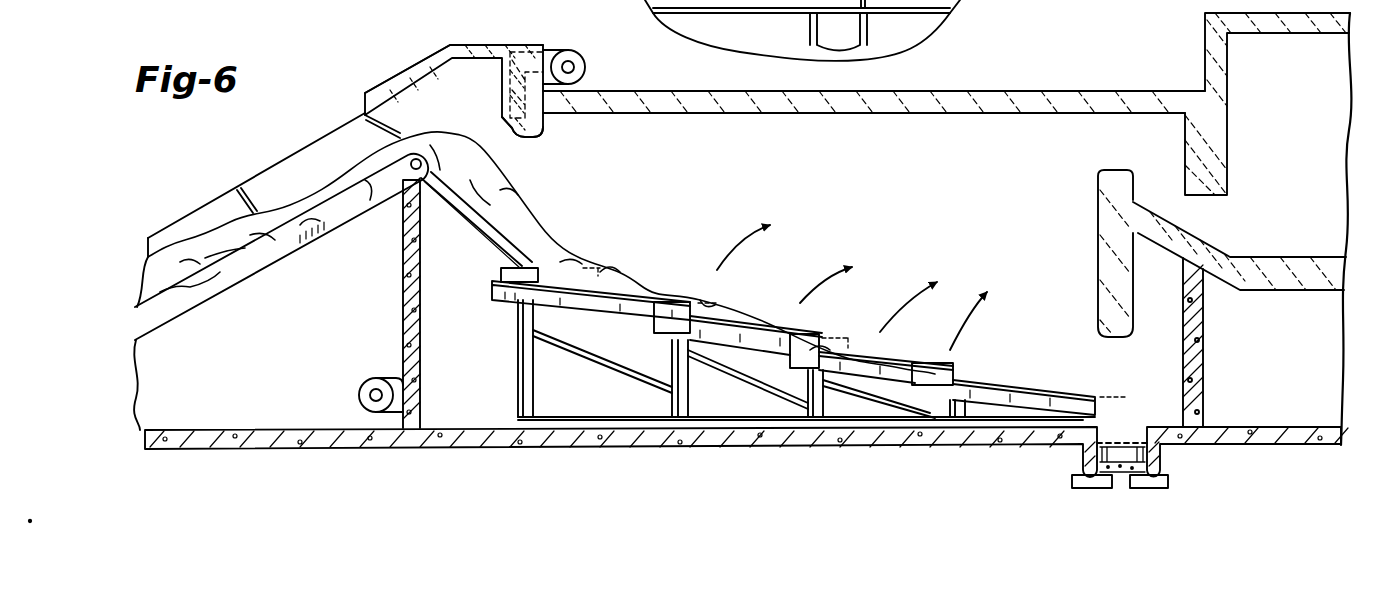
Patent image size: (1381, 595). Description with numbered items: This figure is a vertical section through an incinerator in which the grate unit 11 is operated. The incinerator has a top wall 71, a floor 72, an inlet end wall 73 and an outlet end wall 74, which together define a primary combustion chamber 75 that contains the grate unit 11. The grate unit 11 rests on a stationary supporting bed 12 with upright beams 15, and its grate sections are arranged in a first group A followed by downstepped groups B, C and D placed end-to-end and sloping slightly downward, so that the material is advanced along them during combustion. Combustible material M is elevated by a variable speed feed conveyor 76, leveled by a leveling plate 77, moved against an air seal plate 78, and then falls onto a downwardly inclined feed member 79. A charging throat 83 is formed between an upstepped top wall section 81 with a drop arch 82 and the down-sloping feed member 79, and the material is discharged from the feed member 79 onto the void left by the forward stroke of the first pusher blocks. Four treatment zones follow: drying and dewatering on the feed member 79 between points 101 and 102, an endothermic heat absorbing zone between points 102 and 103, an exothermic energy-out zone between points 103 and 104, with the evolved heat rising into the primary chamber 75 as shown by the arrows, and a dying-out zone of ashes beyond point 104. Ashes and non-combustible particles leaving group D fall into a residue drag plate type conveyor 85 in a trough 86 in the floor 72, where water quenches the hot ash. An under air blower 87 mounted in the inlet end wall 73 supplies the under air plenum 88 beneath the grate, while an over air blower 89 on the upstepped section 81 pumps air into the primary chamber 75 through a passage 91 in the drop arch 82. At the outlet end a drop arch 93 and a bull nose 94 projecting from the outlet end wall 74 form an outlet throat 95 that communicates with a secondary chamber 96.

The grate unit 11 is at (827, 320).
The stationary supporting bed 12 is at (533, 403).
The upright beams 15 is at (868, 33).
The top wall 71 is at (988, 88).
The floor 72 is at (765, 449).
The inlet end wall 73 is at (418, 372).
The outlet end wall 74 is at (1207, 325).
The primary combustion chamber 75 is at (920, 224).
The feed conveyor 76 is at (268, 252).
The leveling plate 77 is at (252, 197).
The air seal plate 78 is at (380, 106).
The feed member 79 is at (470, 215).
The upstepped top wall section 81 is at (488, 22).
The drop arch 82 is at (524, 135).
The charging throat 83 is at (517, 165).
The residue drag plate type conveyor 85 is at (1130, 457).
The trough 86 is at (1107, 468).
The under air blower 87 is at (378, 380).
The under air plenum 88 is at (478, 404).
The over air blower 89 is at (586, 73).
The passage 91 is at (510, 72).
The drop arch 93 is at (1218, 160).
The bull nose 94 is at (1103, 248).
The outlet throat 95 is at (1197, 217).
The secondary chamber 96 is at (1305, 104).
The point 101 is at (395, 130).
The point 102 is at (567, 270).
The point 103 is at (645, 283).
The point 104 is at (903, 360).
The first group of grate sections A is at (583, 312).
The second group of grate sections B is at (737, 345).
The third group of grate sections C is at (897, 383).
The fourth group of grate sections D is at (1037, 400).
The combustible material M is at (223, 247).